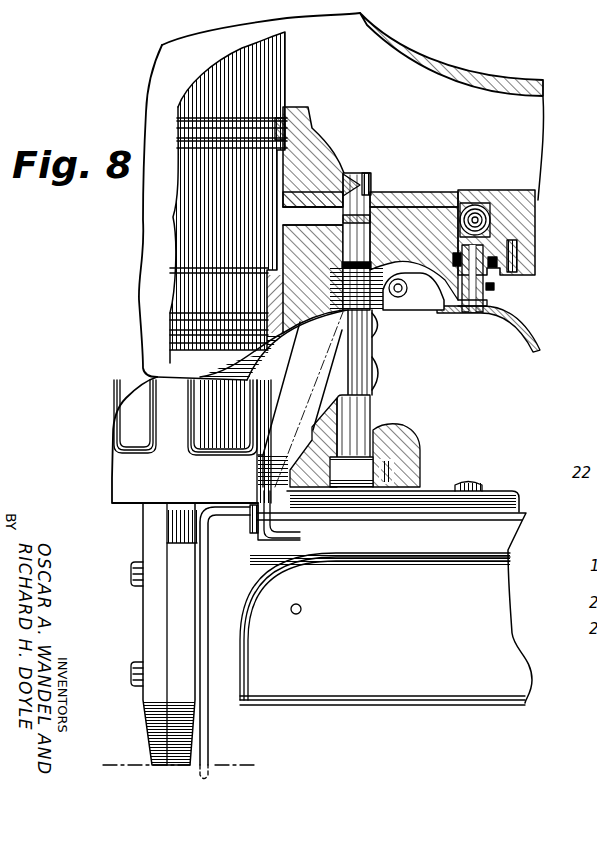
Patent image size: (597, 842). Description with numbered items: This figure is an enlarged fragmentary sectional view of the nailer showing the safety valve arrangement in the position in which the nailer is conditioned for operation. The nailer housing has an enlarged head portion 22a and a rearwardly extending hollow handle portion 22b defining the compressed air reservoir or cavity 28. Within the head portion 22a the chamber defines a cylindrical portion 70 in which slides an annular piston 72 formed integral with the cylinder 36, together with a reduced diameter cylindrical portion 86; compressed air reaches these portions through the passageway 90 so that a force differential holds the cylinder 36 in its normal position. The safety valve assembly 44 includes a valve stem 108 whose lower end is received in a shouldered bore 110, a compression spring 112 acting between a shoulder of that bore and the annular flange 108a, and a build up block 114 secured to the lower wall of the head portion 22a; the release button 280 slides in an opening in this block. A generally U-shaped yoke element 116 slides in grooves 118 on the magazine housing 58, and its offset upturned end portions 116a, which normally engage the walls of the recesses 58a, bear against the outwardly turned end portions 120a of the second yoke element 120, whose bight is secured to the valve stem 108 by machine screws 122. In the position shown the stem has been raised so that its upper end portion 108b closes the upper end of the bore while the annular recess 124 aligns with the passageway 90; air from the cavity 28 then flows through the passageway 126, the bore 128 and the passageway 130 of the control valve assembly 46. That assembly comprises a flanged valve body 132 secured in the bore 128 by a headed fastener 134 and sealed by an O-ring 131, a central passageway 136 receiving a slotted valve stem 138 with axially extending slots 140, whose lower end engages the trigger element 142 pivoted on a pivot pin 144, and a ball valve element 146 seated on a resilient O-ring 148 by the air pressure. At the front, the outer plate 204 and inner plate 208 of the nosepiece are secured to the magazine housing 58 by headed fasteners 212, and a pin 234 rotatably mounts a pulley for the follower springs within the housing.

The head portion 22a is at (120, 474).
The handle portion 22b is at (465, 75).
The cavity 28 is at (544, 98).
The cylinder 36 is at (275, 65).
The safety valve assembly 44 is at (404, 384).
The control valve assembly 46 is at (525, 294).
The magazine housing 58 is at (422, 700).
The recesses 58a is at (272, 540).
The cylindrical portion 70 is at (306, 160).
The annular piston 72 is at (287, 118).
The reduced diameter cylindrical portion 86 is at (288, 203).
The passageway 90 is at (296, 235).
The valve stem 108 is at (372, 404).
The annular flange 108a is at (410, 435).
The upper end portion 108b is at (372, 180).
The shouldered bore 110 is at (376, 466).
The compression spring 112 is at (372, 435).
The build up block 114 is at (505, 492).
The yoke element 116 is at (208, 742).
The offset and upturned end portions 116a is at (245, 522).
The grooves 118 is at (209, 600).
The second yoke element 120 is at (369, 350).
The outwardly turned end portions 120a is at (290, 496).
The machine screws 122 is at (382, 377).
The annular recess 124 is at (371, 205).
The passageway 126 is at (482, 204).
The bore 128 is at (495, 205).
The passageway 130 is at (420, 196).
The O-ring 131 is at (425, 266).
The flanged valve body 132 is at (458, 283).
The headed fastener 134 is at (515, 272).
The passageway 136 is at (503, 287).
The valve stem 138 is at (468, 316).
The slots 140 is at (488, 302).
The trigger element 142 is at (488, 318).
The pivot pin 144 is at (398, 297).
The ball valve element 146 is at (470, 218).
The O-ring 148 is at (482, 232).
The outer plate 204 is at (150, 604).
The inner plate 208 is at (178, 617).
The headed fasteners 212 is at (131, 568).
The pin 234 is at (301, 607).
The release button 280 is at (470, 483).